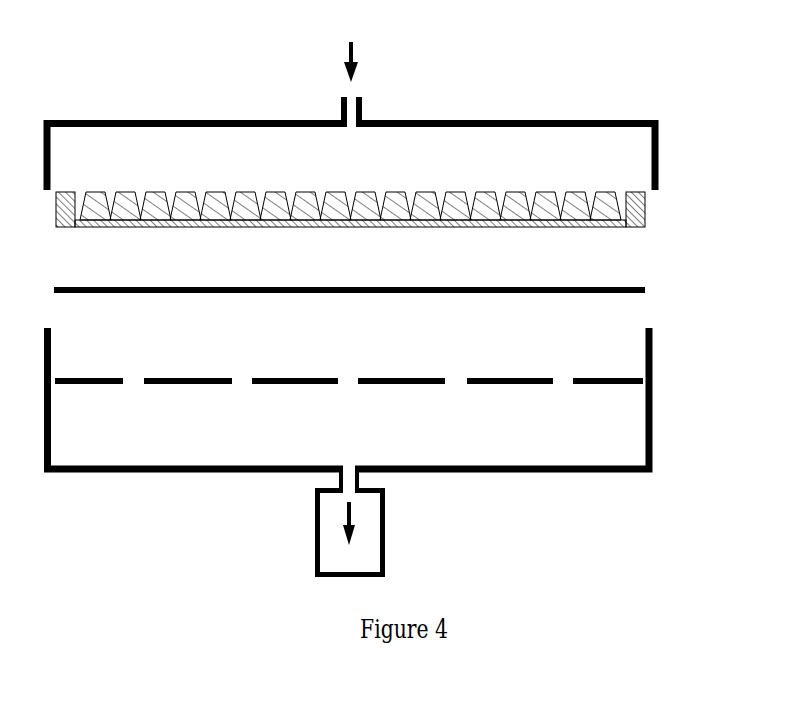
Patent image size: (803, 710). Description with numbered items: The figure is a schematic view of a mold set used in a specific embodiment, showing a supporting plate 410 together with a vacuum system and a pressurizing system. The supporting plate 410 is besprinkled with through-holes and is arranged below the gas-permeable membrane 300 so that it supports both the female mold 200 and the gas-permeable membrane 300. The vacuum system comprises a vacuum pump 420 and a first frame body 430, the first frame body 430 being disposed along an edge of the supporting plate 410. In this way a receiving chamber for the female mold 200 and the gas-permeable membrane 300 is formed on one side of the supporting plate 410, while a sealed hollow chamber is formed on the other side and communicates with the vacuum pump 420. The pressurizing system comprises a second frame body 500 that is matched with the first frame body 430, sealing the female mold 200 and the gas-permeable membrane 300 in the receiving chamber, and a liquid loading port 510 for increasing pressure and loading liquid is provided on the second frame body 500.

The second frame body 500 is at (197, 119).
The liquid loading port 510 is at (348, 100).
The female mold 200 is at (543, 200).
The gas-permeable membrane 300 is at (572, 287).
The supporting plate 410 is at (527, 378).
The first frame body 430 is at (655, 432).
The vacuum pump 420 is at (364, 545).